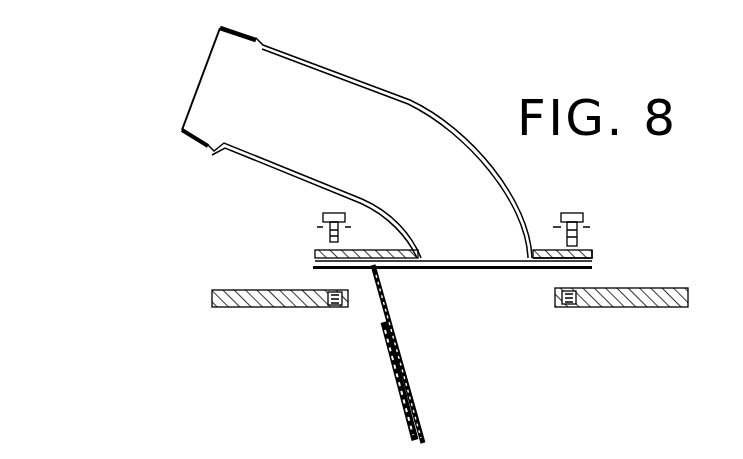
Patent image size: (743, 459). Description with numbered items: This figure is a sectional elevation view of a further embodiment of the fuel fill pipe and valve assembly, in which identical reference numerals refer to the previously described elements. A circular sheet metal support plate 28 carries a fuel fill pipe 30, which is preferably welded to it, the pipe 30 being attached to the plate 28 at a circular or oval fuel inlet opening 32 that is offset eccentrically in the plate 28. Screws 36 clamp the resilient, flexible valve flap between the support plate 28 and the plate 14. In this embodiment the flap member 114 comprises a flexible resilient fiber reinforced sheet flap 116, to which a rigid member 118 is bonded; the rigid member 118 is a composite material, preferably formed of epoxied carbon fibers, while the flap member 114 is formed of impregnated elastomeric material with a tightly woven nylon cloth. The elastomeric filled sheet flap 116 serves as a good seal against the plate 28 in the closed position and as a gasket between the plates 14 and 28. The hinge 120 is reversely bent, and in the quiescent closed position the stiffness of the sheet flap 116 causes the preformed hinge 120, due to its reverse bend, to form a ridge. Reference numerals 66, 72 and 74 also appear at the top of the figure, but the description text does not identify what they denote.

The plate 14 is at (645, 288).
The support plate 28 is at (592, 250).
The fuel fill pipe 30 is at (400, 98).
The fuel inlet opening 32 is at (510, 258).
The screws 36 is at (333, 212).
The member 66 is at (446, 0).
The member 72 is at (500, 0).
The member 74 is at (549, 7).
The flap member 114 is at (443, 372).
The sheet flap 116 is at (388, 290).
The rigid member 118 is at (393, 378).
The hinge 120 is at (375, 282).